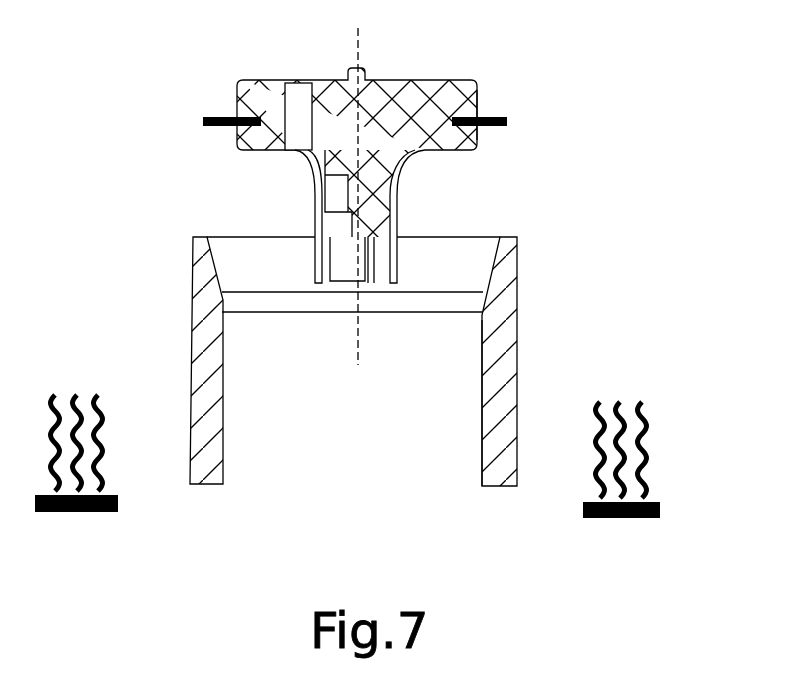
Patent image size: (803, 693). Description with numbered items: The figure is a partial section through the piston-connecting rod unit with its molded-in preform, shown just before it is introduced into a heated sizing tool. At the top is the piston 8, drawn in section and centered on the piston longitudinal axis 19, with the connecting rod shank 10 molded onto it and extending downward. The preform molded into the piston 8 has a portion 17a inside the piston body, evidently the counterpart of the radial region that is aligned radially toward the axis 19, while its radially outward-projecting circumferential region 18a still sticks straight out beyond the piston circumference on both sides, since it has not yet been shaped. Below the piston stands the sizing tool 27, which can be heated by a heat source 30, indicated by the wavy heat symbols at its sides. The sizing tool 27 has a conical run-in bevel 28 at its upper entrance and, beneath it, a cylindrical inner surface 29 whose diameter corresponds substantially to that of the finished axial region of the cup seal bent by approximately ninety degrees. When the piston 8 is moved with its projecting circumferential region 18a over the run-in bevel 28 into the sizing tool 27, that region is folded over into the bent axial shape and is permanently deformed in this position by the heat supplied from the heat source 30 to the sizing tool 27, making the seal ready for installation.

The piston longitudinal axis 19 is at (360, 30).
The piston 8 is at (460, 86).
The connecting rod shank 10 is at (382, 187).
The plug side wall 17a is at (480, 108).
The radially outward-projecting circumferential region 18a is at (493, 125).
The conical run-in bevel 28 is at (493, 270).
The sizing tool 27 is at (508, 296).
The cylindrical inner surface 29 is at (472, 414).
The heat source 30 is at (648, 470).